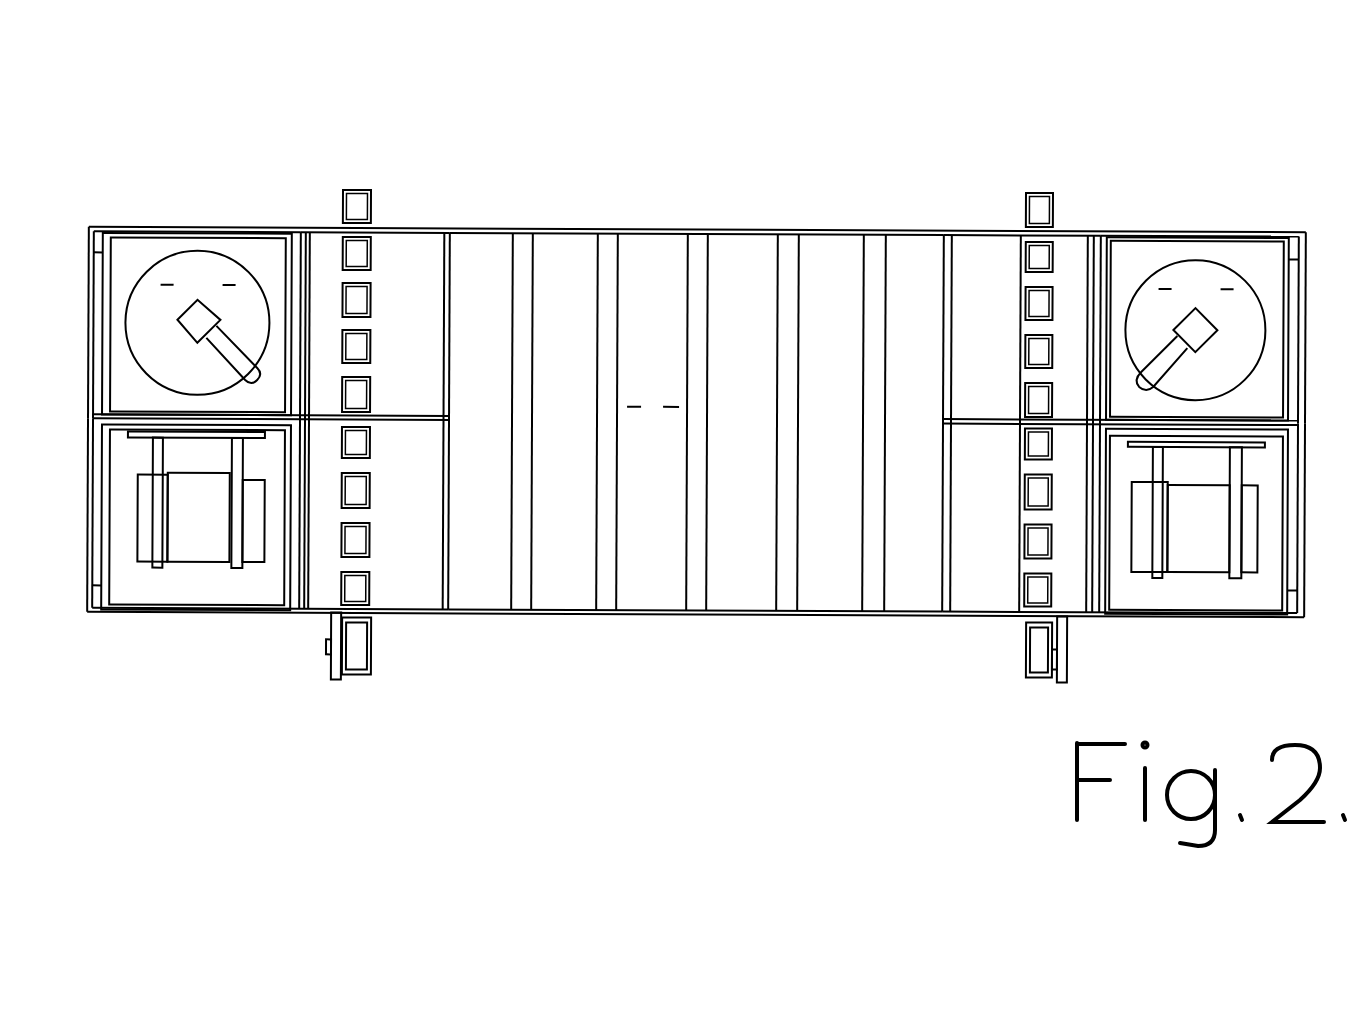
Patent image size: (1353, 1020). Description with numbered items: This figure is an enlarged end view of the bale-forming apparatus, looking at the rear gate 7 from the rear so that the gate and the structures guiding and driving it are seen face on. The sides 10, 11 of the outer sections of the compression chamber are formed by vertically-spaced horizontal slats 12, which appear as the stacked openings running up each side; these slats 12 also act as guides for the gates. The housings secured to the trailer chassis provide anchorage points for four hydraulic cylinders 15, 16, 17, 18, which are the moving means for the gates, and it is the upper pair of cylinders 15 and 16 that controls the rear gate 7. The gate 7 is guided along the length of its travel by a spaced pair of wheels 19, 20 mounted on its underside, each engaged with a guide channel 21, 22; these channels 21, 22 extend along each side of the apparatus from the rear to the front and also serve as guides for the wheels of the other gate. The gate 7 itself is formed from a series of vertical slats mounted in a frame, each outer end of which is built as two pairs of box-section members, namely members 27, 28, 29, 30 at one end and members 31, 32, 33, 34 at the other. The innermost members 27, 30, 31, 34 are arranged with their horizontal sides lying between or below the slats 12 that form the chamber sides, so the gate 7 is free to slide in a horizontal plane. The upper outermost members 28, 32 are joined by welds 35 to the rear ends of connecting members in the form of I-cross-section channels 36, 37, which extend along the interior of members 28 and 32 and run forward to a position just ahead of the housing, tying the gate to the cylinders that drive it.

The rear gate 7 is at (696, 422).
The side 10 is at (271, 330).
The side 11 is at (1120, 319).
The horizontal slats 12 is at (697, 351).
The hydraulic cylinder 15 is at (197, 322).
The hydraulic cylinder 16 is at (1195, 330).
The hydraulic cylinder 17 is at (196, 568).
The hydraulic cylinder 18 is at (1196, 577).
The wheel 19 is at (368, 701).
The wheel 20 is at (1027, 707).
The guide channel 21 is at (393, 691).
The guide channel 22 is at (1002, 687).
The box-section member 27 is at (390, 171).
The upper outermost box-section member 28 is at (197, 291).
The box-section member 29 is at (78, 565).
The box-section member 30 is at (310, 659).
The box-section member 31 is at (1005, 357).
The upper outermost box-section member 32 is at (1199, 291).
The box-section member 33 is at (1288, 564).
The box-section member 34 is at (1090, 657).
The welds 35 is at (695, 340).
The I-cross-section channel 36 is at (81, 290).
The I-cross-section channel 37 is at (1308, 266).